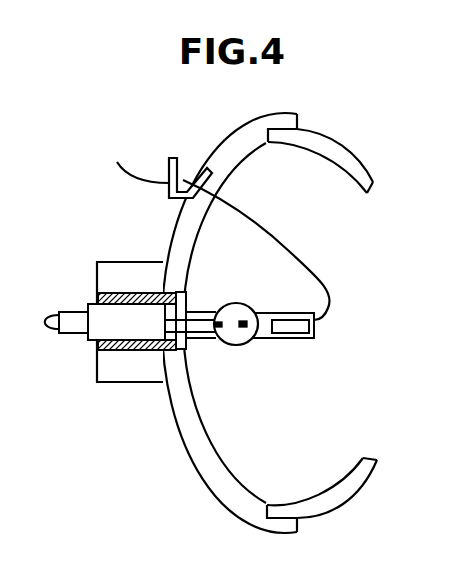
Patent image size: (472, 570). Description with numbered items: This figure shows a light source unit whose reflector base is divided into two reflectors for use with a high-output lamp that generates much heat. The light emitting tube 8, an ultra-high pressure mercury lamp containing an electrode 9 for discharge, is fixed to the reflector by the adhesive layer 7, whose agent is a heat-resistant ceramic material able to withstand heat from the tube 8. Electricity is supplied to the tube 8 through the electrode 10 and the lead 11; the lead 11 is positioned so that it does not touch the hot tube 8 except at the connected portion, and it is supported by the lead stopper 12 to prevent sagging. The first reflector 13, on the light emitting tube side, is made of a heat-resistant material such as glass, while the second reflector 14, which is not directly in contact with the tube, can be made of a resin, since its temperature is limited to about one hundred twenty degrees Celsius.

The adhesive layer 7 is at (96, 296).
The light emitting tube 8 is at (236, 302).
The electrode 9 is at (226, 330).
The electrode 10 is at (52, 329).
The lead 11 is at (328, 303).
The lead stopper 12 is at (168, 164).
The first reflector 13 is at (218, 498).
The second reflector 14 is at (368, 195).